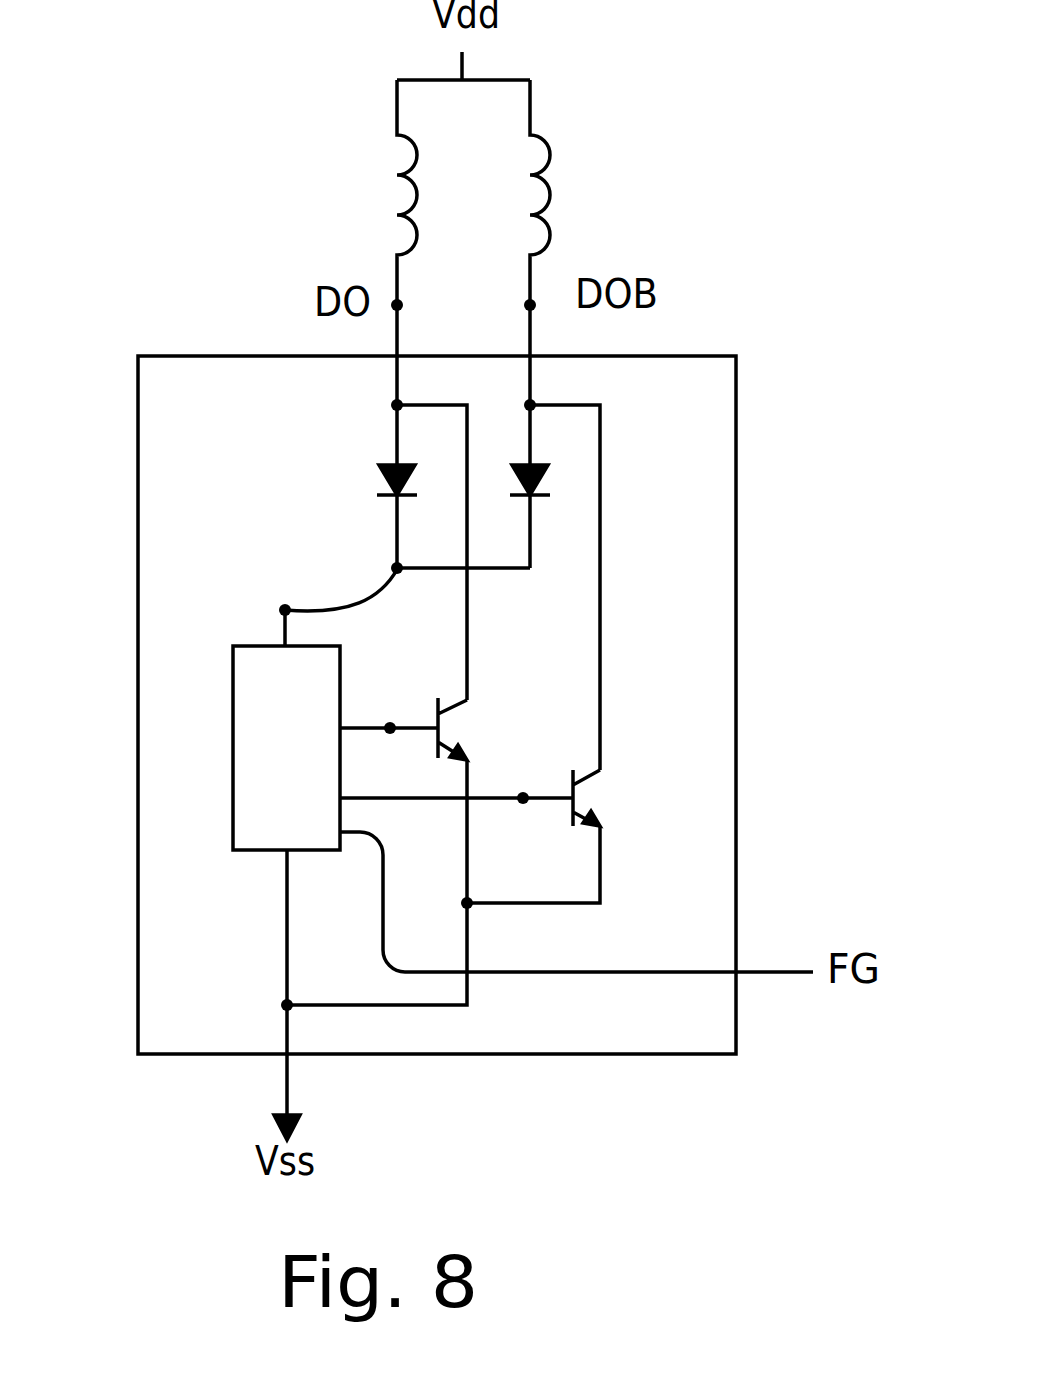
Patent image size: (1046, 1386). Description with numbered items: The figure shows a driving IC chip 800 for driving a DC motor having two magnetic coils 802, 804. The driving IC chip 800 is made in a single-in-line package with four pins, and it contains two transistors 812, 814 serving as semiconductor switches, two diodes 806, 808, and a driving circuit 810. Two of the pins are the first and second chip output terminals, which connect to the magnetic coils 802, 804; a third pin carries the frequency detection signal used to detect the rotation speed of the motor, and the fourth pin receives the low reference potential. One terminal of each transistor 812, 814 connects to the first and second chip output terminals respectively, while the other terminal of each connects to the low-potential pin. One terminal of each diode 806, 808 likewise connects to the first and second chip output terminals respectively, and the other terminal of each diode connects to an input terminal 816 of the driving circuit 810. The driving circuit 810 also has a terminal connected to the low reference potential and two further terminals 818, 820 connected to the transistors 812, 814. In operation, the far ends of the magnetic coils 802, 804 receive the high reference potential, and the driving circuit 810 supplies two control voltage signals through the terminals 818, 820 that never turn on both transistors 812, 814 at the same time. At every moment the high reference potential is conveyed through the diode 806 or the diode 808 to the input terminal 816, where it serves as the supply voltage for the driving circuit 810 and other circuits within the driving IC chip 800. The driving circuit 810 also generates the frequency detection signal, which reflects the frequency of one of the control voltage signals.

The driving IC chip 800 is at (737, 705).
The magnetic coil 802 is at (380, 200).
The magnetic coil 804 is at (568, 190).
The diode 806 is at (375, 482).
The diode 808 is at (553, 478).
The driving circuit 810 is at (233, 748).
The transistor 812 is at (468, 728).
The transistor 814 is at (597, 798).
The input terminal 816 is at (280, 610).
The terminal 818 is at (390, 722).
The terminal 820 is at (523, 806).